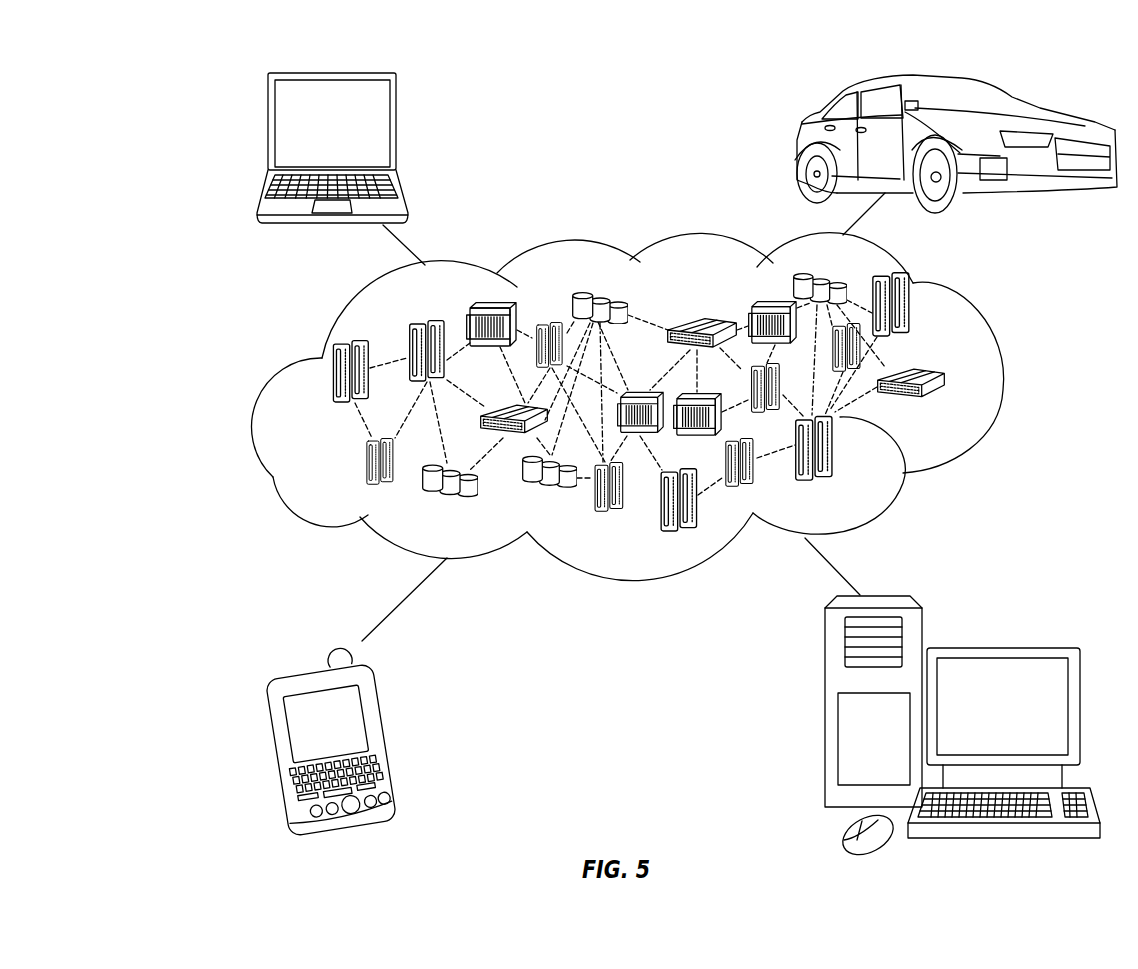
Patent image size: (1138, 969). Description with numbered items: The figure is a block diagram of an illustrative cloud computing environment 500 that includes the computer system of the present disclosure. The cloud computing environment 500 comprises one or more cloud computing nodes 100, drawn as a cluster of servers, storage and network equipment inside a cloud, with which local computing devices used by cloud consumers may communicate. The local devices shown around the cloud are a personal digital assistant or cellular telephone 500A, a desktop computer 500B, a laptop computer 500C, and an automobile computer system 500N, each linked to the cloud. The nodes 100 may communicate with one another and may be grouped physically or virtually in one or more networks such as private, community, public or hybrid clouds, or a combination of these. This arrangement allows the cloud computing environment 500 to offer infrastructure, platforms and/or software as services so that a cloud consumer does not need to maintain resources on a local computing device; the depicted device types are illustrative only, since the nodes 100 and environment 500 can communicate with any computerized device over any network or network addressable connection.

The cloud computing environment 500 is at (149, 72).
The cloud computing nodes 100 is at (956, 409).
The personal digital assistant (PDA) or cellular telephone 500A is at (387, 737).
The desktop computer 500B is at (998, 647).
The laptop computer 500C is at (397, 130).
The automobile computer system 500N is at (798, 143).